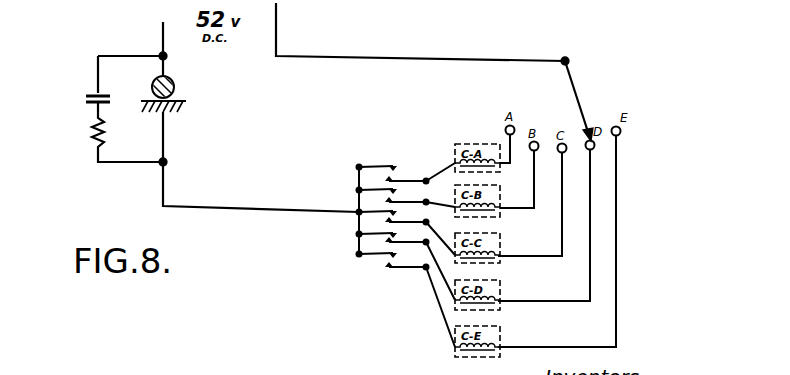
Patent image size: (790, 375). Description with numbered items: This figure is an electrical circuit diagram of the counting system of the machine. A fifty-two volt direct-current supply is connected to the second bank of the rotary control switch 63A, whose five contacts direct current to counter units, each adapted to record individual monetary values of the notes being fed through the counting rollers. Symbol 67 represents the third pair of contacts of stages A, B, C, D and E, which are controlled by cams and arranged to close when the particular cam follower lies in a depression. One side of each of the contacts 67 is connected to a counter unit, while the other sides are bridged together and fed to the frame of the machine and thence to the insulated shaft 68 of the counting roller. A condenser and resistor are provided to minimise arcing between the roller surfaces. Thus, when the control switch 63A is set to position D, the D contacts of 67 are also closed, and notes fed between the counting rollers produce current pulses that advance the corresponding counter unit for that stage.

The insulated shaft 68 is at (174, 85).
The third pair of contacts 67 is at (386, 168).
The rotary control switch 63A is at (588, 103).